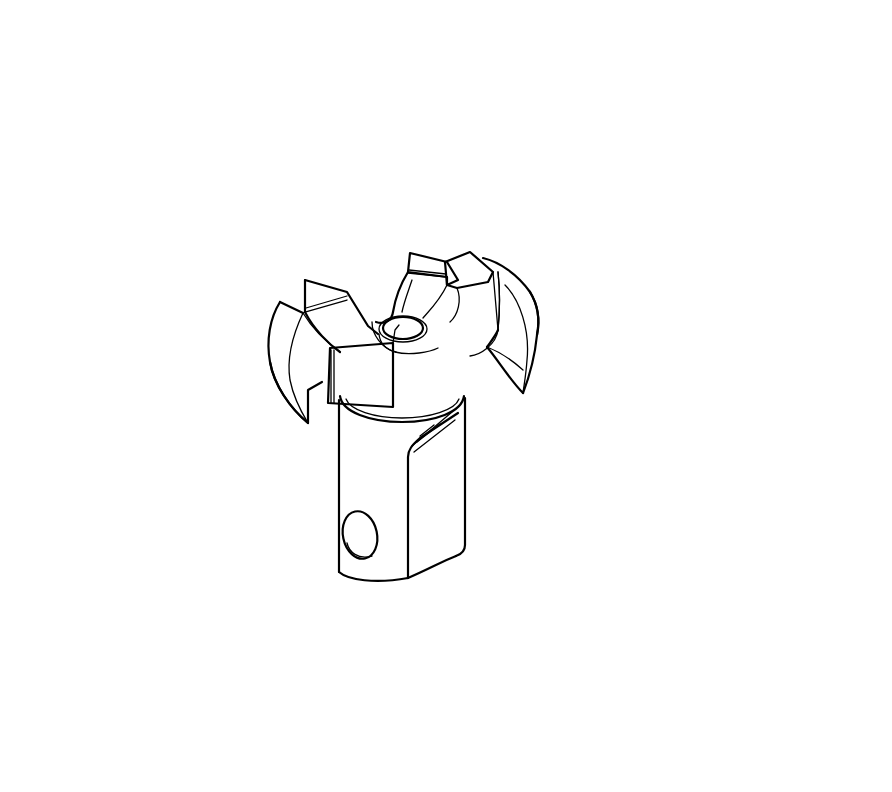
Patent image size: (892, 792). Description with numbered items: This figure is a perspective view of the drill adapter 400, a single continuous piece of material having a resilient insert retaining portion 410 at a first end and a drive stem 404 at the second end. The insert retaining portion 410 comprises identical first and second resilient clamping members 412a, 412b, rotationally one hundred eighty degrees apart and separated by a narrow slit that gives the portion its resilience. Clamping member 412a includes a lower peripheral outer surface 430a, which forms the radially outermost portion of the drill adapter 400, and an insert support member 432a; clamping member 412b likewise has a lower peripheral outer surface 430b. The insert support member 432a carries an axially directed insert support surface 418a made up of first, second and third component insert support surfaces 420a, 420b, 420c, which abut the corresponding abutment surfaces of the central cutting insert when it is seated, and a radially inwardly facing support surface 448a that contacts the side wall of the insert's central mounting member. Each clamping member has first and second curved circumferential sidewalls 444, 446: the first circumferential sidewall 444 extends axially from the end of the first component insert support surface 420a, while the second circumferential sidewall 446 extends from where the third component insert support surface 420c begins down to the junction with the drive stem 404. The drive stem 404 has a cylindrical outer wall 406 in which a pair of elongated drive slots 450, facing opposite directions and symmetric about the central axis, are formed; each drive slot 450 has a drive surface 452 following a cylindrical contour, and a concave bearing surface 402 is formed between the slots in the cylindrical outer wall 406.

The drill adapter 400 is at (693, 123).
The concave bearing surface 402 is at (365, 538).
The drive stem 404 is at (333, 503).
The cylindrical outer wall 406 is at (363, 458).
The insert retaining portion 410 is at (357, 284).
The first resilient clamping member 412a is at (540, 320).
The second resilient clamping member 412b is at (242, 358).
The axially directed insert support surface 418a is at (378, 150).
The first component insert support surface 420a is at (486, 265).
The second component insert support surface 420b is at (472, 260).
The third component insert support surface 420c is at (422, 260).
The lower peripheral outer surface 430a is at (520, 295).
The lower peripheral outer surface 430b is at (272, 365).
The insert support member 432a is at (497, 298).
The first curved circumferential sidewall 444 is at (525, 378).
The second curved circumferential sidewall 446 is at (413, 372).
The radially inwardly facing support surface 448a is at (403, 293).
The drive slot 450 is at (440, 525).
The drive surface 452 is at (430, 543).